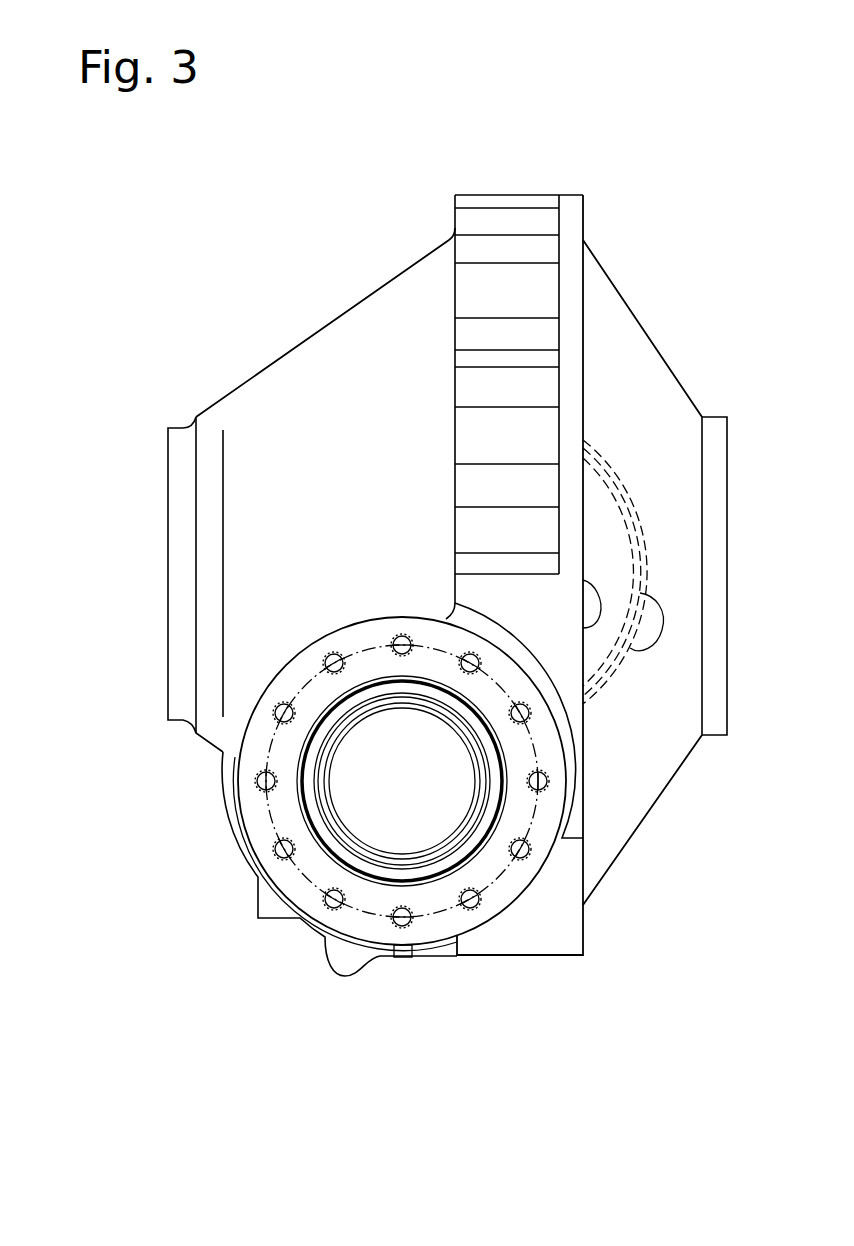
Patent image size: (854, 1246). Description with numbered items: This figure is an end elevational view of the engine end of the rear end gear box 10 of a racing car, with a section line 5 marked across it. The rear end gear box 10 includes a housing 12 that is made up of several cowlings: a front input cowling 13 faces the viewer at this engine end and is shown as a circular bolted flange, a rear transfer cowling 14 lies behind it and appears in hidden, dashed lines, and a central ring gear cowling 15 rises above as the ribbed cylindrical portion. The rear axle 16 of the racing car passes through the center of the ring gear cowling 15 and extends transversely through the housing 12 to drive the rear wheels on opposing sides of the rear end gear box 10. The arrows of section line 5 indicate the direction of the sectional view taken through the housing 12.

The section line 5- 5 is at (413, 107).
The rear end gear box 10 is at (243, 273).
The housing 12 is at (217, 742).
The front input cowling 13 is at (560, 783).
The rear transfer cowling 14 is at (615, 537).
The central ring gear cowling 15 is at (567, 227).
The rear axle 16 is at (151, 593).